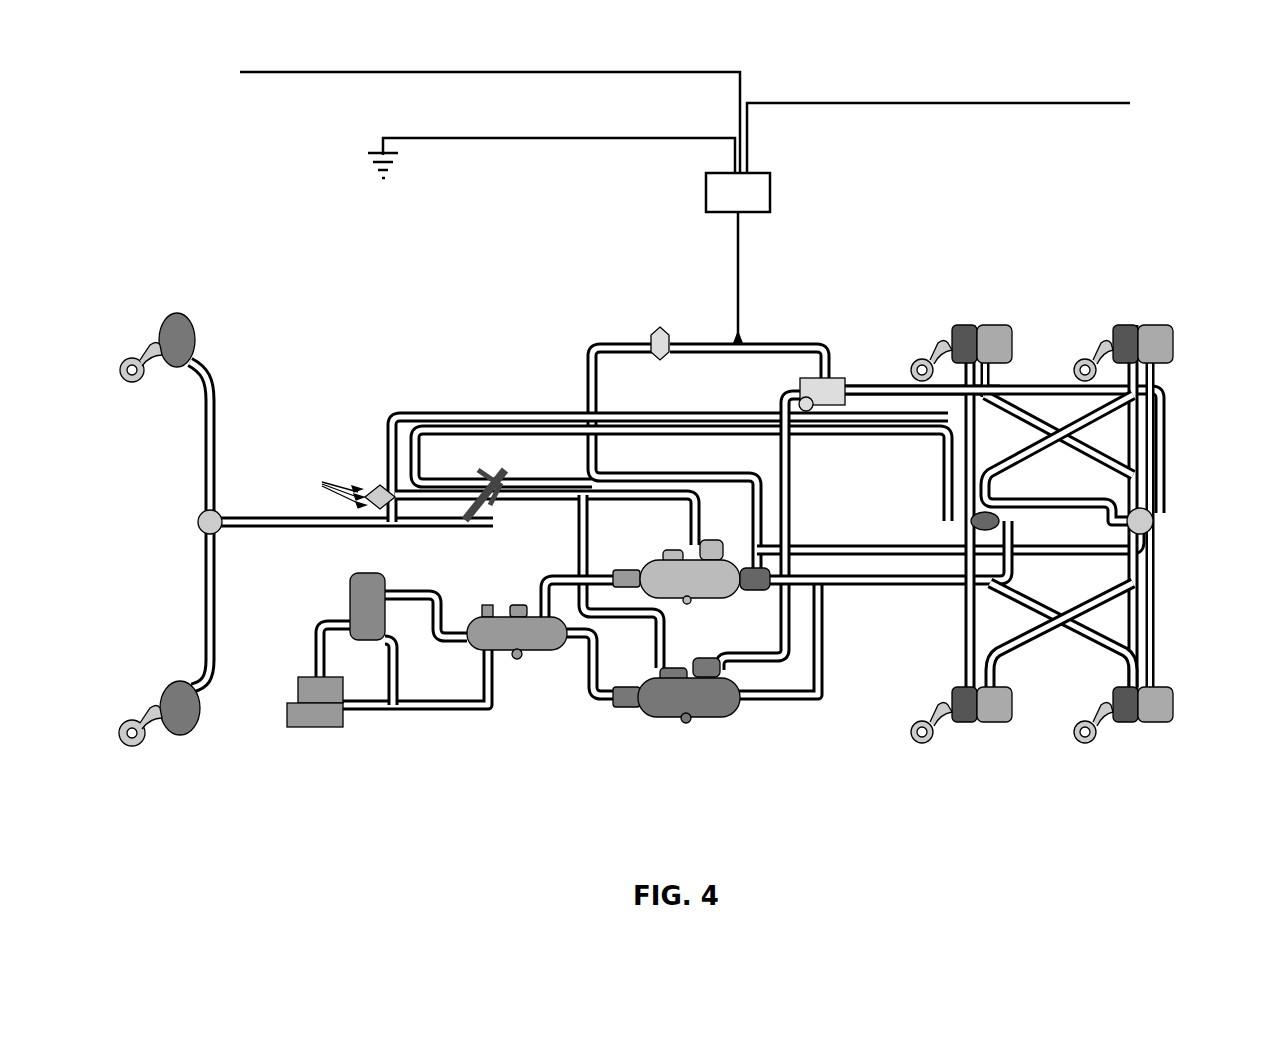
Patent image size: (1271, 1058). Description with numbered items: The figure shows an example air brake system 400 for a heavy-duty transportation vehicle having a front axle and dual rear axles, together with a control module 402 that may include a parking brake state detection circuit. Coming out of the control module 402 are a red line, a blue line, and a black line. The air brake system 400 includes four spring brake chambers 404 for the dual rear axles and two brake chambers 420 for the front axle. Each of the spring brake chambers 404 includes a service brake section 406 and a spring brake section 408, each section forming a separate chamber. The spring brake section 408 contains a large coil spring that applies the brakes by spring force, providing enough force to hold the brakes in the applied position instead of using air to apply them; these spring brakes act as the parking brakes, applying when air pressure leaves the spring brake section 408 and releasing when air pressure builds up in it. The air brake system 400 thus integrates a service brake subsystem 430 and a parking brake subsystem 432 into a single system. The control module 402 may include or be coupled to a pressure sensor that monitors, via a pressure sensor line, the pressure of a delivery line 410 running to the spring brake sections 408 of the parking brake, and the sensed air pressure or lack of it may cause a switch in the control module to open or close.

The air brake system 400 is at (654, 427).
The control module 402 is at (770, 193).
The spring brake chamber 404 is at (1068, 508).
The service brake section 406 is at (955, 325).
The spring brake section 408 is at (1010, 345).
The delivery line 410 is at (898, 388).
The brake chamber 420 is at (167, 693).
The service brake subsystem 430 is at (710, 427).
The parking brake subsystem 432 is at (248, 533).